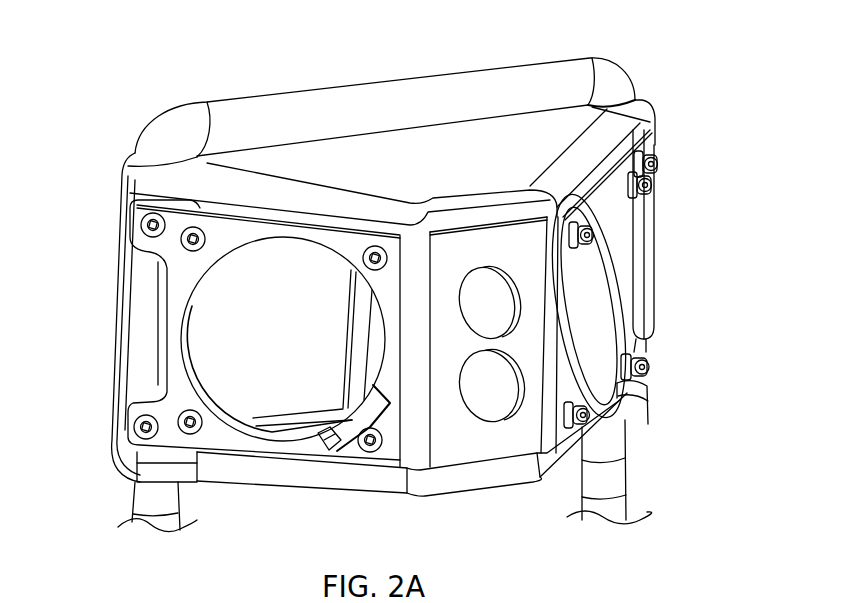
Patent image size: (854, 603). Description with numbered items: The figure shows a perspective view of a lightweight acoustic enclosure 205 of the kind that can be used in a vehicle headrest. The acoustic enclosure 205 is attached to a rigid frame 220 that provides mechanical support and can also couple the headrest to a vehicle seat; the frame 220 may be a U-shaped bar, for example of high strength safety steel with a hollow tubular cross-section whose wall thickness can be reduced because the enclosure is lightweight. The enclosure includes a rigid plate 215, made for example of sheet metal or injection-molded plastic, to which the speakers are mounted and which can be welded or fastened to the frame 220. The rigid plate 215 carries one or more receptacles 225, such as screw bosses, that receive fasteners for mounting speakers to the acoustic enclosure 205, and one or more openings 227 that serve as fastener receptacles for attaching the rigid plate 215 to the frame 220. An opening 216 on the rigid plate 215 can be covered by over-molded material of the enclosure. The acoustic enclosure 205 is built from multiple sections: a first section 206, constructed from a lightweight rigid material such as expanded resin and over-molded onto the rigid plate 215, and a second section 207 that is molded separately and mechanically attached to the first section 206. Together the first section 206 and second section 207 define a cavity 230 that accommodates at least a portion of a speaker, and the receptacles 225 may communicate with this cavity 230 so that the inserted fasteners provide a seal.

The acoustic enclosure 205 is at (137, 49).
The first section 206 is at (551, 145).
The second section 207 is at (127, 173).
The rigid plate 215 is at (507, 420).
The opening 216 is at (488, 300).
The frame 220 is at (267, 110).
The receptacle 225 is at (167, 253).
The opening 227 is at (130, 237).
The cavity 230 is at (230, 352).